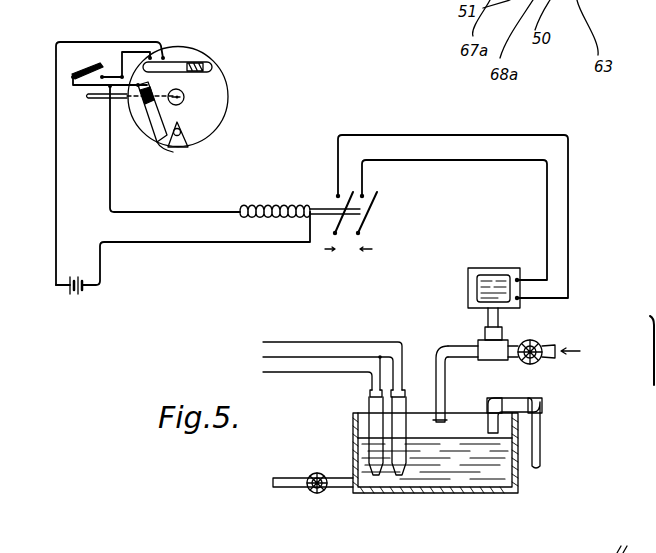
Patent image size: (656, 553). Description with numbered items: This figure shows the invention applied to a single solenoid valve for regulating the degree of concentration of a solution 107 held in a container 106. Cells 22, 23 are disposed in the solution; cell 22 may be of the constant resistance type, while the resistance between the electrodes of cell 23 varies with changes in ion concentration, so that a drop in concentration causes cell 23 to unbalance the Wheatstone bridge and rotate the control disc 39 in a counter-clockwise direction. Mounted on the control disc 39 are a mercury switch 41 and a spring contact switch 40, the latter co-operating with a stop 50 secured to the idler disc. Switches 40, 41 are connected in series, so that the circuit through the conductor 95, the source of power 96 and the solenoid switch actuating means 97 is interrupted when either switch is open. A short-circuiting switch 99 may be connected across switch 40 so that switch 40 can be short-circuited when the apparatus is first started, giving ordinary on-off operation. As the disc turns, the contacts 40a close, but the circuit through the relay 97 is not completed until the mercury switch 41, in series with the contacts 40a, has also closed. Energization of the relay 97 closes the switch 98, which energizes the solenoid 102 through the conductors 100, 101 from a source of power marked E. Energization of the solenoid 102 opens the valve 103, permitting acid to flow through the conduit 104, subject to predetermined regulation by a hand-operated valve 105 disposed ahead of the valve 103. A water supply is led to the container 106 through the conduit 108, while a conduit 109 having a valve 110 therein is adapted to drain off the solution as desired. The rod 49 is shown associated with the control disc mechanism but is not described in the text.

The cell 22 is at (373, 418).
The cell 23 is at (400, 408).
The control disc 39 is at (222, 85).
The spring contact switch 40 is at (147, 124).
The contacts 40a is at (173, 149).
The mercury switch 41 is at (185, 62).
The rod 49 is at (98, 100).
The stop 50 is at (188, 133).
The conductor 95 is at (56, 188).
The source of power 96 is at (80, 296).
The solenoid switch actuating means 97 is at (283, 207).
The switch 98 is at (374, 207).
The short-circuiting switch 99 is at (82, 68).
The conductor 100 is at (498, 162).
The conductor 101 is at (570, 194).
The solenoid 102 is at (492, 279).
The valve 103 is at (499, 347).
The conduit 104 is at (473, 352).
The hand-operated valve 105 is at (539, 362).
The container 106 is at (518, 488).
The solution 107 is at (455, 478).
The conduit 108 is at (541, 435).
The conduit 109 is at (288, 488).
The valve 110 is at (318, 494).